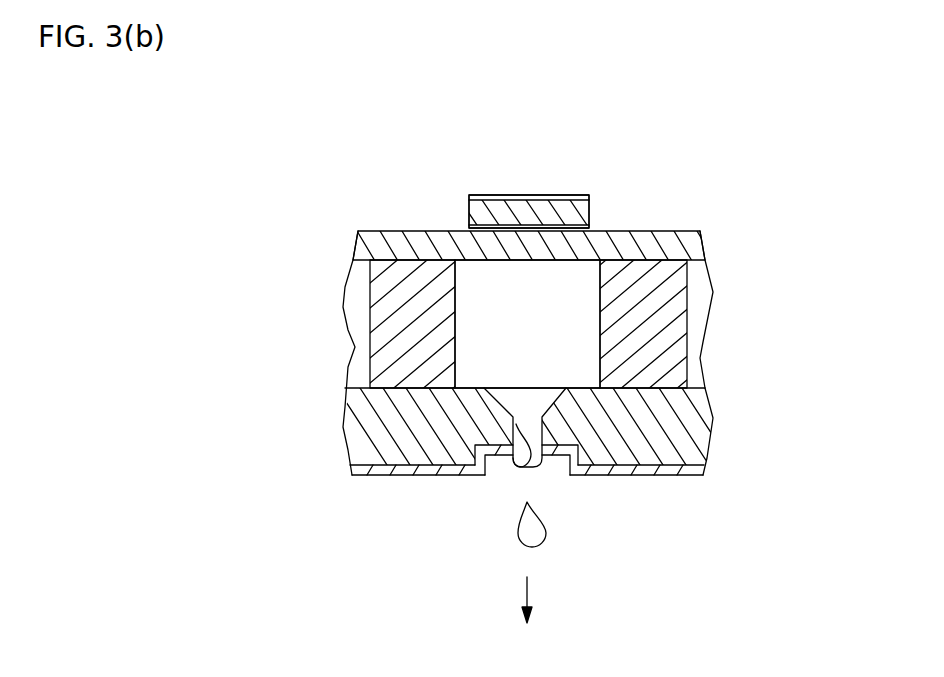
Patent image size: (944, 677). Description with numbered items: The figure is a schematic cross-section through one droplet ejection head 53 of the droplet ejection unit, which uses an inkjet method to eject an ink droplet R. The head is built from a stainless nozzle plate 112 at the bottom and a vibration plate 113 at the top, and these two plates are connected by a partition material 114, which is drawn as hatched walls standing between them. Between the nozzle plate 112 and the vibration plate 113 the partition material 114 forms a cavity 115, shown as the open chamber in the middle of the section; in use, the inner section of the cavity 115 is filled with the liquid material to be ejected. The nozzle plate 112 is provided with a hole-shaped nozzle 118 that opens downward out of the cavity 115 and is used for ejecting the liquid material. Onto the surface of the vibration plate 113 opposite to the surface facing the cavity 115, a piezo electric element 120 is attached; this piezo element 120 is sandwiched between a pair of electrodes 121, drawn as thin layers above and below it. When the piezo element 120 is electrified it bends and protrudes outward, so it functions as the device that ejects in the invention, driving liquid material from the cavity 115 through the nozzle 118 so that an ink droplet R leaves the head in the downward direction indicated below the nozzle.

The droplet ejection head 53 is at (583, 178).
The nozzle plate 112 is at (692, 427).
The vibration plate 113 is at (360, 240).
The partition material 114 is at (370, 340).
The cavity 115 is at (580, 304).
The nozzle 118 is at (522, 468).
The piezo electric element 120 is at (582, 213).
The electrode 121 is at (470, 229).
The ink droplet R is at (537, 532).